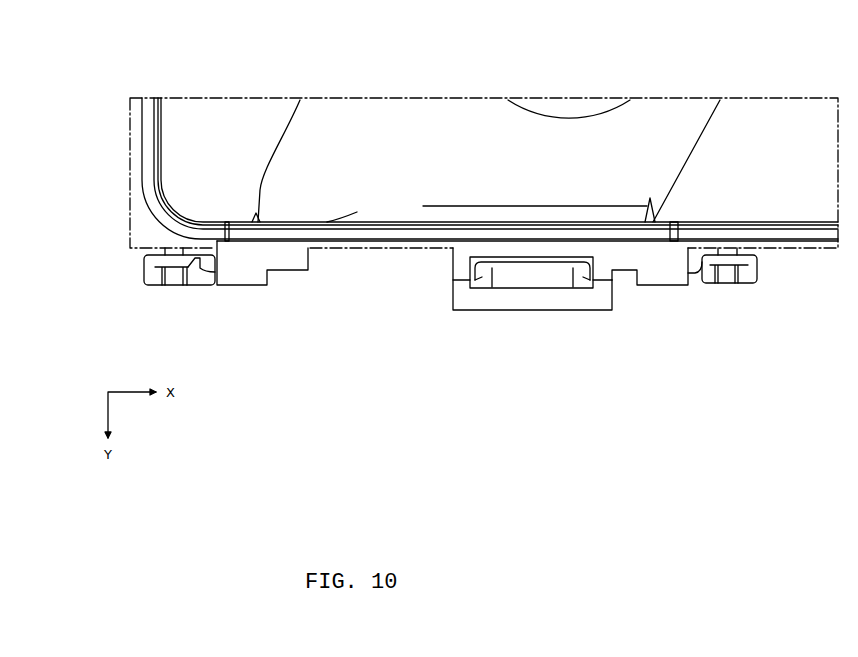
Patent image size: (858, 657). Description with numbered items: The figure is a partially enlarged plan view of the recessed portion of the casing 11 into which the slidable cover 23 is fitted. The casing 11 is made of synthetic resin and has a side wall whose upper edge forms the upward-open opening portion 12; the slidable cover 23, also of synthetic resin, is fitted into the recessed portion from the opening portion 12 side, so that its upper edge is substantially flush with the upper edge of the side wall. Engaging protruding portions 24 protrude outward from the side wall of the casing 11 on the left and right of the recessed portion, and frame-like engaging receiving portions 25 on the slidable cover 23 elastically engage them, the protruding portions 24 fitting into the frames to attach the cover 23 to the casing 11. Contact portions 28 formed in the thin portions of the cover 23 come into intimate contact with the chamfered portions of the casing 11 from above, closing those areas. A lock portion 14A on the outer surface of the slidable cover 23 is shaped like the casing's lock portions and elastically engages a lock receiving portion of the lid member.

The casing 11 is at (145, 130).
The opening portion 12 is at (158, 122).
The slidable cover 23 is at (145, 157).
The engaging protruding portion 24 is at (173, 278).
The engaging receiving portion 25 is at (148, 268).
The contact portion 28 is at (236, 232).
The lock portion 14A is at (532, 302).